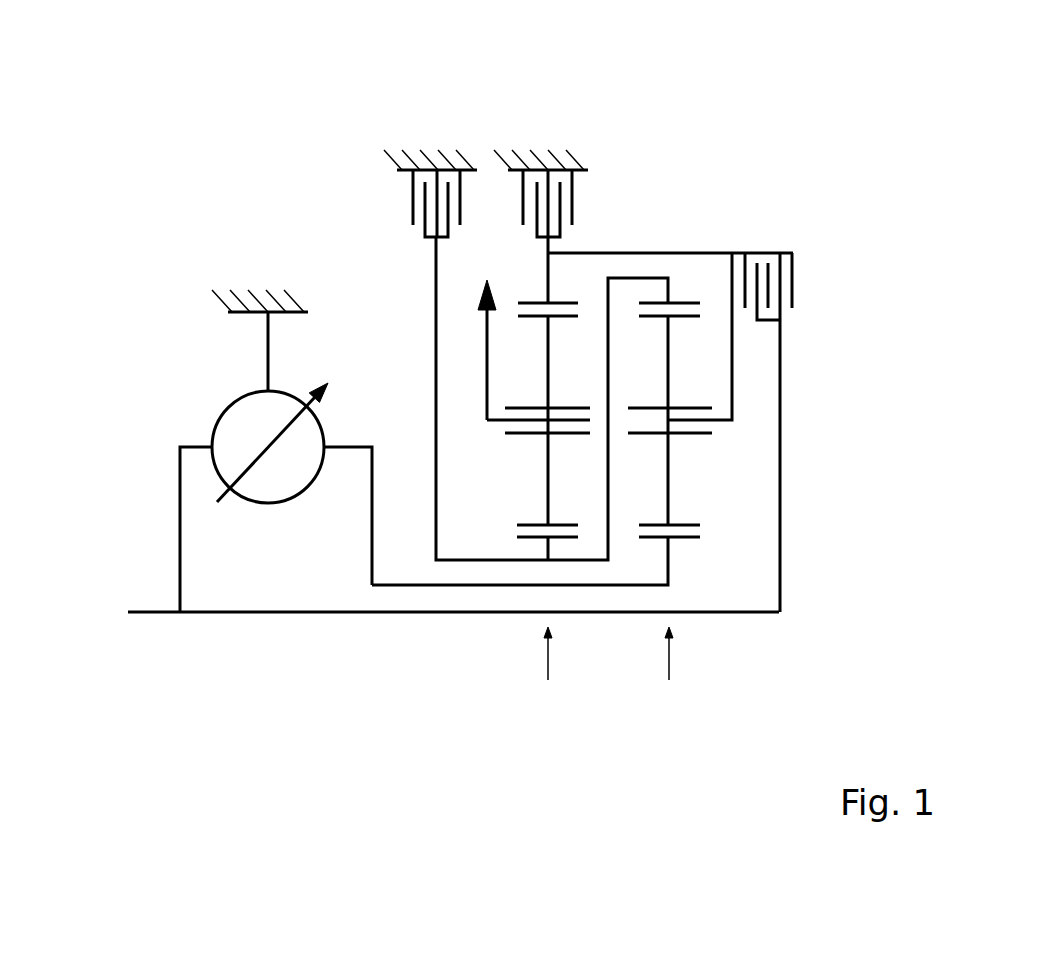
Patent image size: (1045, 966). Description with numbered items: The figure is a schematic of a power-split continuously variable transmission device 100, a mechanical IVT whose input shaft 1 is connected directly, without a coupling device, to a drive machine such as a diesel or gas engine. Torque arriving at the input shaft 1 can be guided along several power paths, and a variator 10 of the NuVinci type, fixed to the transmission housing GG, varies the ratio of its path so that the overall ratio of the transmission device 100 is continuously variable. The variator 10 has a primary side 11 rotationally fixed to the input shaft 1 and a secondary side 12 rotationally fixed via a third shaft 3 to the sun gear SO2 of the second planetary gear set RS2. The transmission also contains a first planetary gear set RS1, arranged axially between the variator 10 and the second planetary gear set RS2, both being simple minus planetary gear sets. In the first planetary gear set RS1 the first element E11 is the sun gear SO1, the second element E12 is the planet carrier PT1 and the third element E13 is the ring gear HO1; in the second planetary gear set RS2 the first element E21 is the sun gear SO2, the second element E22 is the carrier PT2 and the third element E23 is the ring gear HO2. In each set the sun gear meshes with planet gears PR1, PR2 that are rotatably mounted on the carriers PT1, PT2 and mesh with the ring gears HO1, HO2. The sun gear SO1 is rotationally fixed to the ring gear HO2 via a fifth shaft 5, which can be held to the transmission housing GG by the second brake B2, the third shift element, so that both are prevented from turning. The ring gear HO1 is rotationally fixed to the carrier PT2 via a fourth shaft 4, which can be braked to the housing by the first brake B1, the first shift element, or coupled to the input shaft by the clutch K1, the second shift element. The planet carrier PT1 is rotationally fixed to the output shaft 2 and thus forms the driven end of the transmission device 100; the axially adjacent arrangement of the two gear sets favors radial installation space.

The transmission device 100 is at (170, 135).
The input shaft 1 is at (172, 618).
The output shaft 2 is at (487, 373).
The third shaft 3 is at (392, 585).
The fourth shaft 4 is at (648, 253).
The fifth shaft 5 is at (600, 560).
The variator 10 is at (223, 407).
The primary side 11 is at (205, 437).
The secondary side 12 is at (332, 452).
The transmission housing GG is at (242, 290).
The first shift element B1 is at (582, 202).
The third shift element B2 is at (402, 205).
The second shift element K1 is at (801, 286).
The ring gear HO1 is at (563, 303).
The third element E13 is at (589, 174).
The ring gear HO2 is at (683, 303).
The third element E23 is at (706, 174).
The planet gears PR1 is at (548, 472).
The planet gears PR2 is at (668, 363).
The planet carrier PT1 is at (518, 447).
The second element E12 is at (486, 609).
The planet carrier PT2 is at (688, 442).
The second element E22 is at (771, 466).
The sun gear SO1 is at (548, 548).
The first element E11 is at (576, 668).
The sun gear SO2 is at (680, 537).
The first element E21 is at (777, 573).
The first planetary gear set RS1 is at (547, 675).
The second planetary gear set RS2 is at (670, 675).